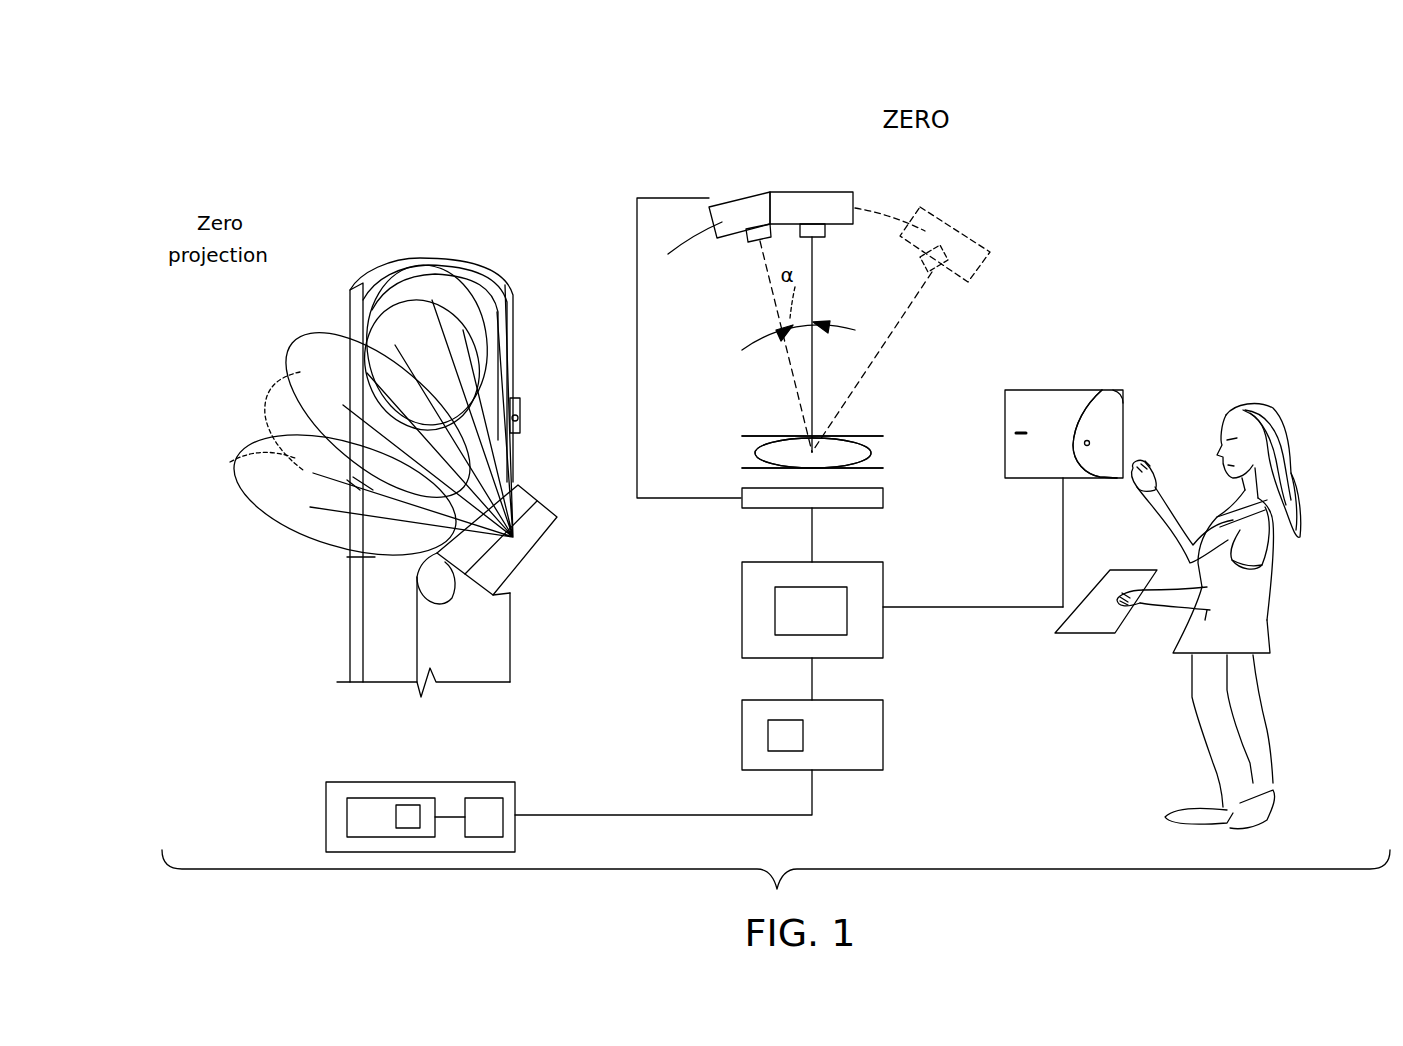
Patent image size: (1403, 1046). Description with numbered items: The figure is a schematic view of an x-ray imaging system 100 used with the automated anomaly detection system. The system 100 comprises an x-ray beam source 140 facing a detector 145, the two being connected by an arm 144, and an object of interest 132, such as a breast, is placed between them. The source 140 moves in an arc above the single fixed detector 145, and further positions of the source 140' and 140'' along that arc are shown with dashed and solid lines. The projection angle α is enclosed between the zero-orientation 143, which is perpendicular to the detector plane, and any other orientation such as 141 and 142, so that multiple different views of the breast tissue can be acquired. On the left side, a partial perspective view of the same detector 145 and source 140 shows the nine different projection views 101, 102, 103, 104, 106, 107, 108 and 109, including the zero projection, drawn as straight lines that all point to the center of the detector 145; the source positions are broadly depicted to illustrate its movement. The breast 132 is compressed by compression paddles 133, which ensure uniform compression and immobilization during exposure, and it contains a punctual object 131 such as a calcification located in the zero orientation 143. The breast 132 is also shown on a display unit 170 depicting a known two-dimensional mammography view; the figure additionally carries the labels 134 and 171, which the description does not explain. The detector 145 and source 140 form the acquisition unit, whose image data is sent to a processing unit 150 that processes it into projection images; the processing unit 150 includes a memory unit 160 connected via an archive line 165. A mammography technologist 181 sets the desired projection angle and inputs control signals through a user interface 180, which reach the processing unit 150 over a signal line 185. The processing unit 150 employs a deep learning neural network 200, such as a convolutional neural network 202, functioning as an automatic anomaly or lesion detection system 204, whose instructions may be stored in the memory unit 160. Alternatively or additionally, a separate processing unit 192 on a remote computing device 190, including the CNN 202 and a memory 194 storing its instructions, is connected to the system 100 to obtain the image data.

The x-ray imaging system 100 is at (1012, 92).
The projection view 101 is at (295, 535).
The projection view 102 is at (237, 470).
The projection view 103 is at (262, 385).
The projection view 104 is at (305, 335).
The projection view 106 is at (378, 293).
The projection view 107 is at (427, 278).
The projection view 108 is at (468, 258).
The projection view 109 is at (513, 335).
The punctual object 131 is at (926, 423).
The object of interest 132 is at (872, 452).
The compression paddles 133 is at (752, 434).
The imaging volume 134 is at (670, 457).
The x-ray beam source 140 is at (522, 215).
The x-ray source position 140' is at (767, 224).
The x-ray source position 140'' is at (477, 349).
The orientation 141 is at (775, 293).
The orientation 142 is at (905, 320).
The zero orientation 143 is at (815, 265).
The arm 144 is at (583, 526).
The detector 145 is at (473, 592).
The processing unit 150 is at (742, 607).
The memory unit 160 is at (742, 725).
The archive line 165 is at (812, 683).
The display unit 170 is at (1025, 480).
The displayed image 171 is at (1008, 368).
The user interface 180 is at (1083, 633).
The mammography technologist 181 is at (1272, 612).
The signal line 185 is at (983, 612).
The remote computing device 190 is at (312, 826).
The separate processing unit 192 is at (347, 800).
The memory 194 is at (490, 800).
The deep learning neural network 200 is at (740, 750).
The convolutional neural network 202 is at (803, 735).
The automatic anomaly/lesion detection system 204 is at (775, 620).